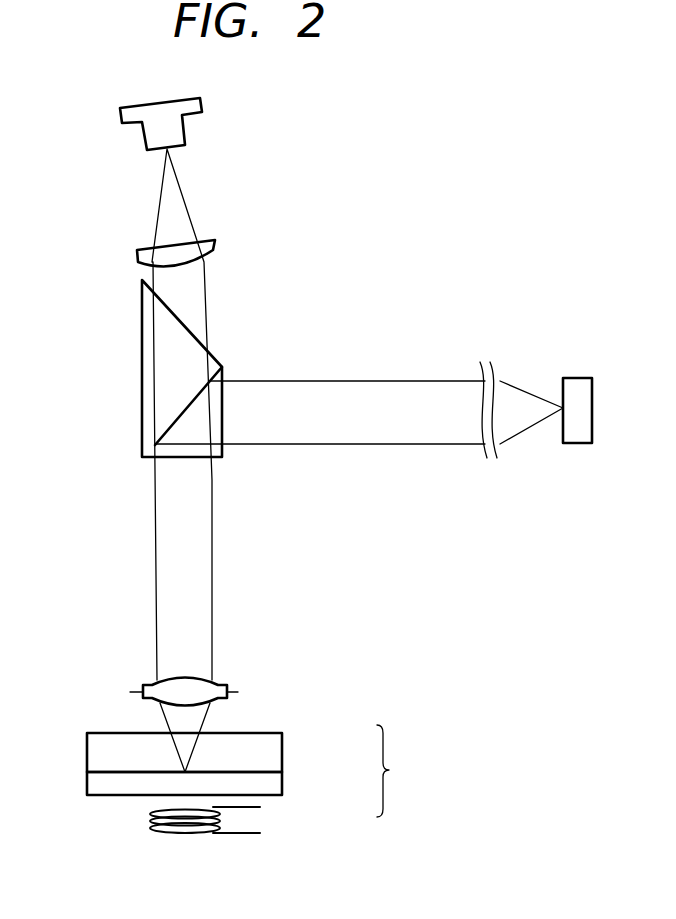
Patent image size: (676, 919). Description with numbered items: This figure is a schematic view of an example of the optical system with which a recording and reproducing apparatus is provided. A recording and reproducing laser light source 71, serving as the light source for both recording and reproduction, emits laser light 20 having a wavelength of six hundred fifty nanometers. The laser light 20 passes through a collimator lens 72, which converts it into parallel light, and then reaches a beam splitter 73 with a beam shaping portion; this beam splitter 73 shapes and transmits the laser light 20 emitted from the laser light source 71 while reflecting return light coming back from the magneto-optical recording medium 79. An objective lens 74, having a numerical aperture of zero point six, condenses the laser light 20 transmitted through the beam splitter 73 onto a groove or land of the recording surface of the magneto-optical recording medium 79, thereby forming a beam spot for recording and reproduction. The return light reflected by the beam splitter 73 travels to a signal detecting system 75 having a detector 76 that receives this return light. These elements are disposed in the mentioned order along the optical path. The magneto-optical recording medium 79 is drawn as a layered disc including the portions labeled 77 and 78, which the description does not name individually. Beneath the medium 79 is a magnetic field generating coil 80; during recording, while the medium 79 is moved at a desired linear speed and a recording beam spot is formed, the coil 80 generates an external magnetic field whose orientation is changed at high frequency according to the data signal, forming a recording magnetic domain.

The laser light 20 is at (173, 193).
The recording and reproducing laser light source 71 is at (119, 110).
The collimator lens 72 is at (137, 253).
The beam splitter with beam shaping portion 73 is at (142, 413).
The objective lens 74 is at (230, 692).
The signal detecting system 75 is at (443, 453).
The detector 76 is at (585, 378).
The recording layer 77 is at (273, 747).
The substrate 78 is at (277, 787).
The magneto-optical recording medium 79 is at (399, 771).
The magnetic field generating coil 80 is at (231, 833).